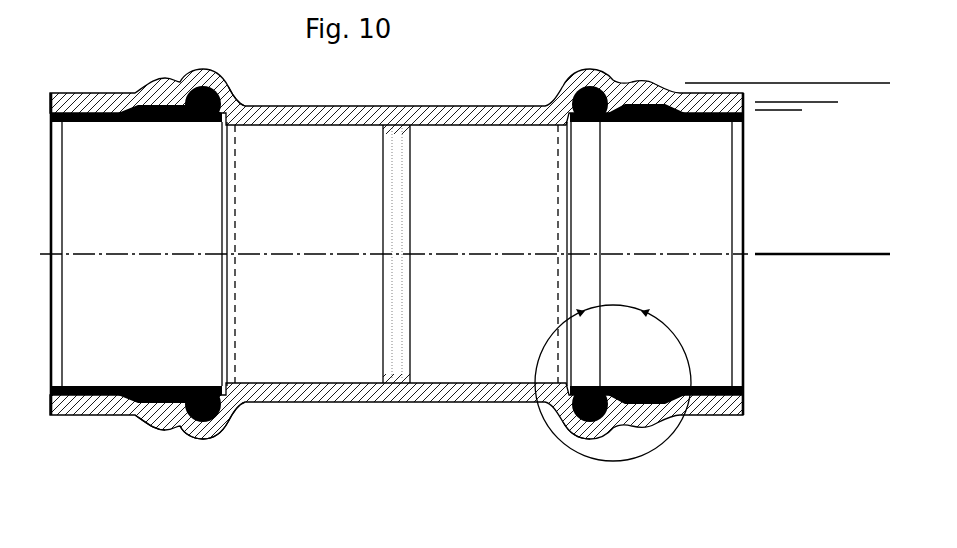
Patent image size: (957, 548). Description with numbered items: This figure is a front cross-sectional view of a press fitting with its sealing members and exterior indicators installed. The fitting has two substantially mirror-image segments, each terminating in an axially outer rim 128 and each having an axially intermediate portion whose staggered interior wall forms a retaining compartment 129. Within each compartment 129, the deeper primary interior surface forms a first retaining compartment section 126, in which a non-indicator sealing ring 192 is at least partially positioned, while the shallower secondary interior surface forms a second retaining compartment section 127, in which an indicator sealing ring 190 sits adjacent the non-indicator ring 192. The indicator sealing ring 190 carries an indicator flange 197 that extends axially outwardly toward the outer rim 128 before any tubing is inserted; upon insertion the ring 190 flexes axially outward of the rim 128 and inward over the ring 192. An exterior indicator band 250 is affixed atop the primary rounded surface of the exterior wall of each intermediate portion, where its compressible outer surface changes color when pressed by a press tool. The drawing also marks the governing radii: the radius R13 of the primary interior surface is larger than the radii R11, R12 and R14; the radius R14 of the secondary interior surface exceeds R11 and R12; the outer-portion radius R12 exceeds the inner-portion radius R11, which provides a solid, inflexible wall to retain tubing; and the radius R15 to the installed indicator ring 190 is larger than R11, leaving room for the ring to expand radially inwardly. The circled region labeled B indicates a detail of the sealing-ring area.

The exterior indicator band 250 is at (200, 69).
The axially outer rim 128 is at (749, 410).
The indicator sealing ring 190 is at (150, 385).
The indicator flange 197 is at (735, 387).
The retaining compartment 129 is at (246, 345).
The non-indicator sealing ring 192 is at (228, 410).
The second retaining compartment section 127 is at (140, 422).
The first retaining compartment section 126 is at (213, 432).
The detail B is at (613, 378).
The radius of axially inner portion R11 is at (452, 127).
The radius of axially outer portion R12 is at (787, 112).
The radius of primary interior surface R13 is at (878, 85).
The radius of secondary interior surface R14 is at (817, 104).
The radius to installed sealing member R15 is at (702, 124).